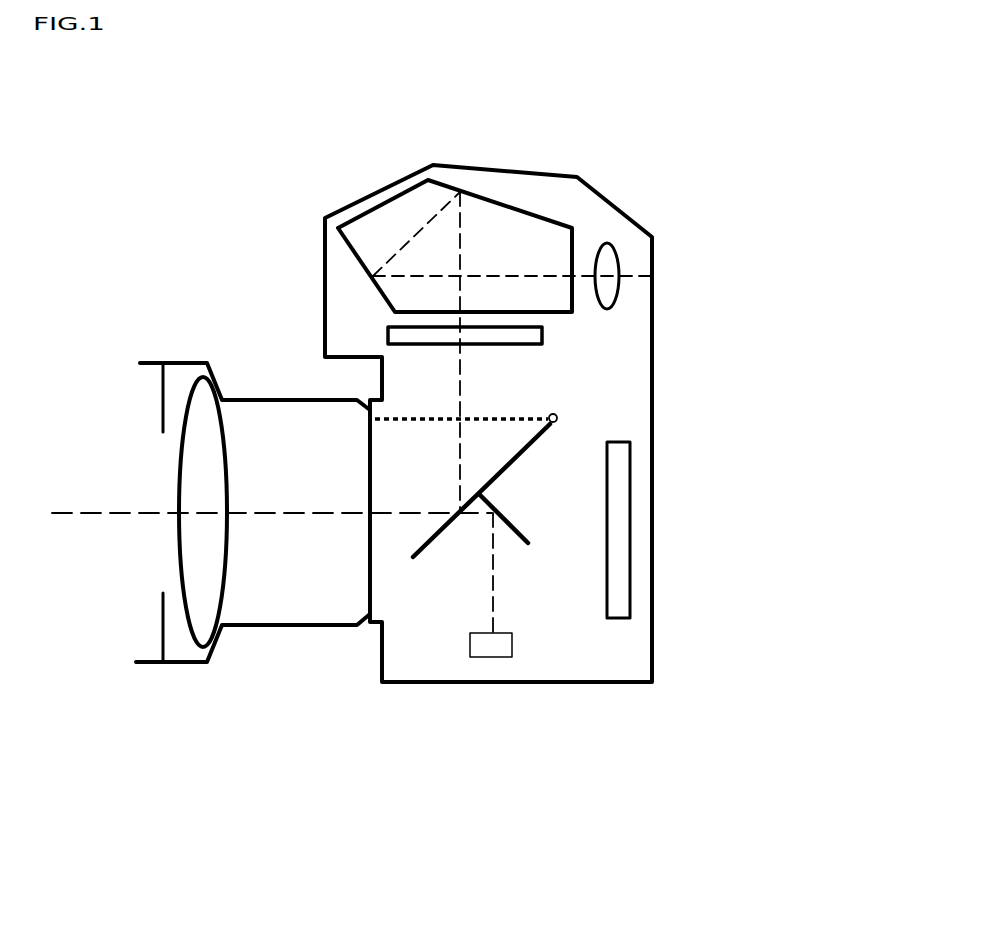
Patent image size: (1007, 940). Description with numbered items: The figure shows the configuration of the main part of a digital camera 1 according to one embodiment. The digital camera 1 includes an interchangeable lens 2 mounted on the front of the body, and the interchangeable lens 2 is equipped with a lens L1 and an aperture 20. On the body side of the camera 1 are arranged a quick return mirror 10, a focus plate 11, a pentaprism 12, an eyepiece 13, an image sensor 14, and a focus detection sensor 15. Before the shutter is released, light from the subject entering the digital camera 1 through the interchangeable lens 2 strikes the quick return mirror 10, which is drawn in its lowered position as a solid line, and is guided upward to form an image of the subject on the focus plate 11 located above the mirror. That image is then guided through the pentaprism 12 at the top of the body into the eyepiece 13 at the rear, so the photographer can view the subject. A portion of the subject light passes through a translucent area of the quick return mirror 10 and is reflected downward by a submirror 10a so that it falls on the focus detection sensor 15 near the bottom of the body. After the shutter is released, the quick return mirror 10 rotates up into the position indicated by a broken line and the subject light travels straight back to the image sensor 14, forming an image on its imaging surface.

The digital camera 1 is at (447, 167).
The interchangeable lens 2 is at (312, 627).
The quick return mirror 10 is at (522, 455).
The submirror 10a is at (528, 545).
The focus plate 11 is at (543, 337).
The pentaprism 12 is at (388, 217).
The eyepiece 13 is at (602, 245).
The image sensor 14 is at (618, 467).
The focus detection sensor 15 is at (483, 645).
The aperture 20 is at (162, 412).
The lens L1 is at (194, 617).